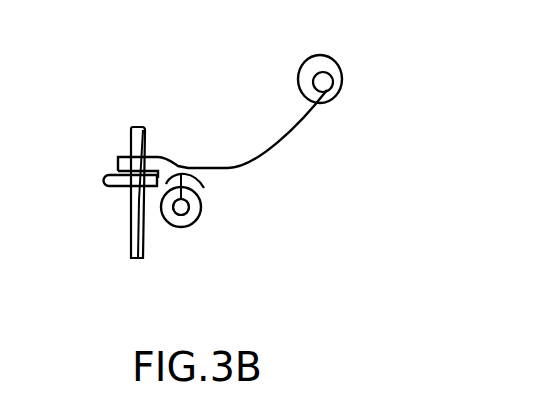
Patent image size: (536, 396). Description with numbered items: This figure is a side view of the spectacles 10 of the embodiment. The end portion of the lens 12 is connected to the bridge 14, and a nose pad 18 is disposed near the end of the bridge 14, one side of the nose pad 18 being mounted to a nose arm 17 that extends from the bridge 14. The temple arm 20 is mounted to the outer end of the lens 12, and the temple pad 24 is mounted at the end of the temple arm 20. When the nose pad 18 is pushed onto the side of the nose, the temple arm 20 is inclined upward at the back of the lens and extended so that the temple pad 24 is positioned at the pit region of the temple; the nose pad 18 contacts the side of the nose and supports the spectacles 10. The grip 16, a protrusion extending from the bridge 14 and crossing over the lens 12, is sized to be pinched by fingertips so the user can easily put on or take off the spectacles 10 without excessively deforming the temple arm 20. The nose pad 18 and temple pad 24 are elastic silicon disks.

The spectacles 10 is at (157, 68).
The bridge 14 is at (118, 157).
The grip 16 is at (104, 184).
The lens 12 is at (135, 259).
The nose arm 17 is at (204, 188).
The nose pad 18 is at (192, 228).
The temple arm 20 is at (238, 163).
The temple pad 24 is at (320, 57).